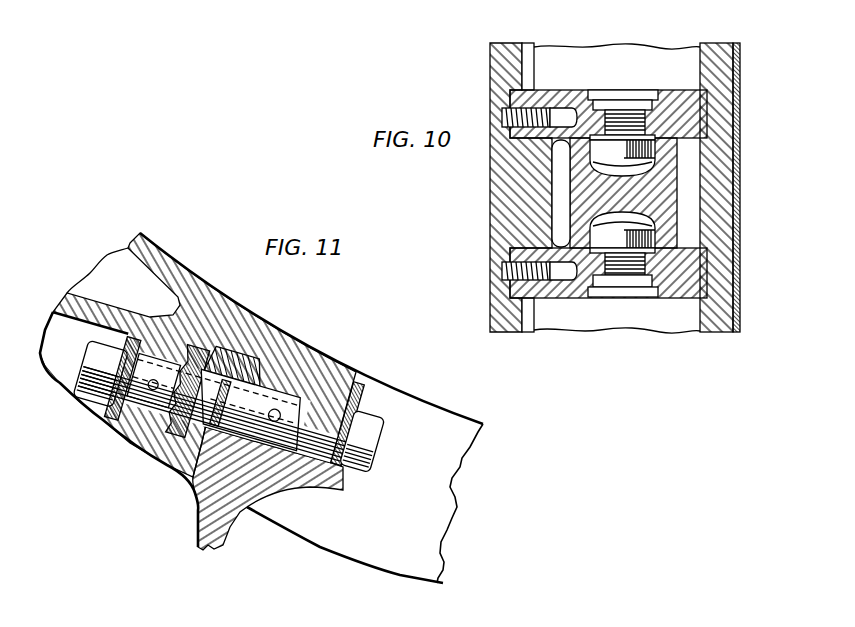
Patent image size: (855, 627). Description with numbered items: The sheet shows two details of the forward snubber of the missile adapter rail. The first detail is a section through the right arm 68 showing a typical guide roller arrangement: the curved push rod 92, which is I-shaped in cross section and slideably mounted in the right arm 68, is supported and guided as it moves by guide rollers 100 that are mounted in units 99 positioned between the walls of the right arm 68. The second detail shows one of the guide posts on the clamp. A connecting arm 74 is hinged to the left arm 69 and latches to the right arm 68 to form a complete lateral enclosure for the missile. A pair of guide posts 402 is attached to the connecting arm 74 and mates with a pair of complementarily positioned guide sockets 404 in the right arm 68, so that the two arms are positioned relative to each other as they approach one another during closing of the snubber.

In FIG. 10, the right arm 68 is at (742, 97).
In FIG. 10, the push rod 92 is at (676, 225).
In FIG. 10, the units 99 is at (577, 88).
In FIG. 10, the guide rollers 100 is at (608, 150).
In FIG. 11, the left arm 69 is at (228, 295).
In FIG. 11, the connecting arm 74 is at (343, 387).
In FIG. 11, the guide posts 402 is at (265, 396).
In FIG. 11, the guide sockets 404 is at (205, 356).